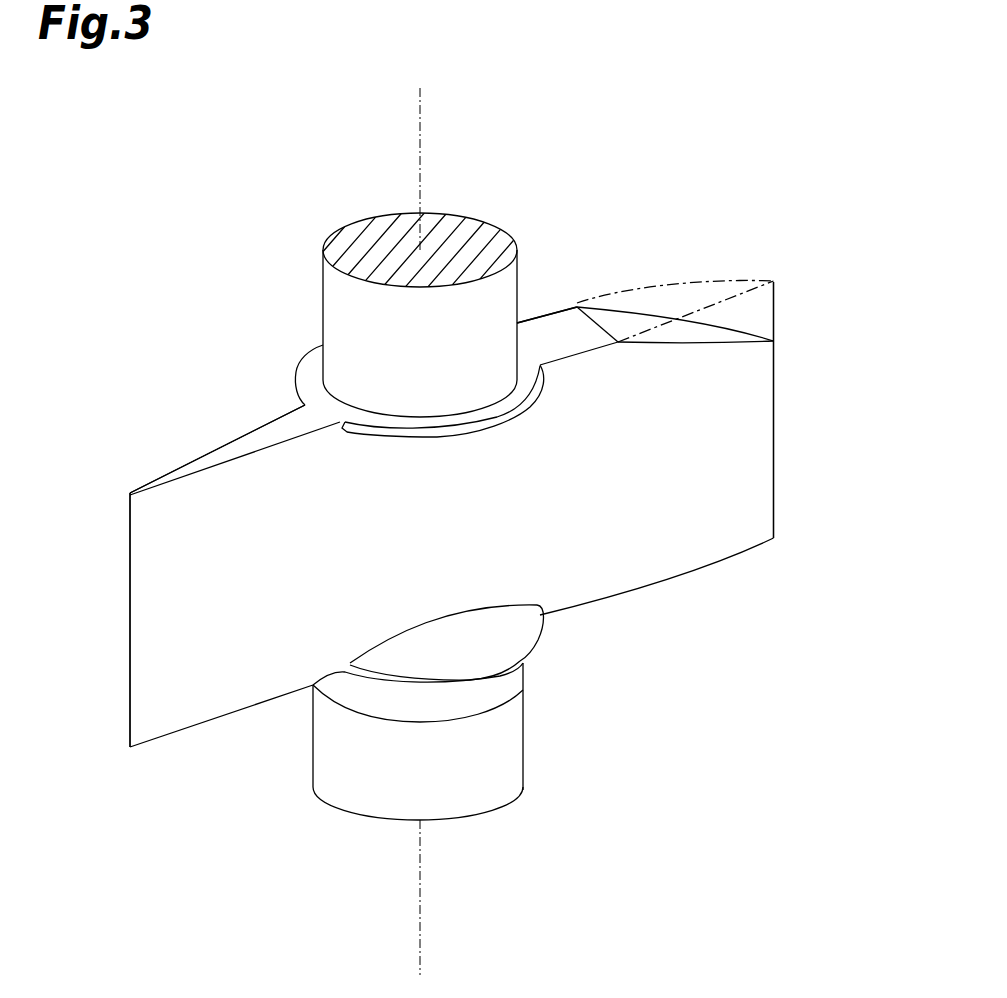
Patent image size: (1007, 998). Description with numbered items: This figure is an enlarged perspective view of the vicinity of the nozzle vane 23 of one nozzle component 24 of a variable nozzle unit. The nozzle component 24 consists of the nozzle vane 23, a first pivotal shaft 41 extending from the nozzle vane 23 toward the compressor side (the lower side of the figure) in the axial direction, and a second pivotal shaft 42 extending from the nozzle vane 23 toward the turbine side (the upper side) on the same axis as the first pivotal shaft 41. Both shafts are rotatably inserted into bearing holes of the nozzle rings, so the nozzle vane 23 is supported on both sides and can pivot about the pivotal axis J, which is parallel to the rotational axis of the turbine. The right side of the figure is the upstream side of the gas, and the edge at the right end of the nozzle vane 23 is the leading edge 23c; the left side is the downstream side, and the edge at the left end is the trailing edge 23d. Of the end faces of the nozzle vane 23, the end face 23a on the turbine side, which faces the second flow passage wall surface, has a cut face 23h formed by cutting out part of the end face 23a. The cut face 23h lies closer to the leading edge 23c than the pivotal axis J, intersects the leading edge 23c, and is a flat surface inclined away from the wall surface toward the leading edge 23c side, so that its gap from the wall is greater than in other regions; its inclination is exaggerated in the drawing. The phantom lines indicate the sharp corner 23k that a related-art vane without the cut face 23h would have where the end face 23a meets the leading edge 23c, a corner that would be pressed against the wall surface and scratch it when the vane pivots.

The nozzle vane 23 is at (575, 522).
The end face 23a is at (248, 434).
The leading edge 23c is at (778, 428).
The trailing edge 23d is at (170, 642).
The cut face 23h is at (690, 338).
The corner 23k is at (775, 283).
The nozzle component 24 is at (680, 157).
The first pivotal shaft 41 is at (340, 743).
The second pivotal shaft 42 is at (337, 304).
The pivotal axis J is at (422, 160).